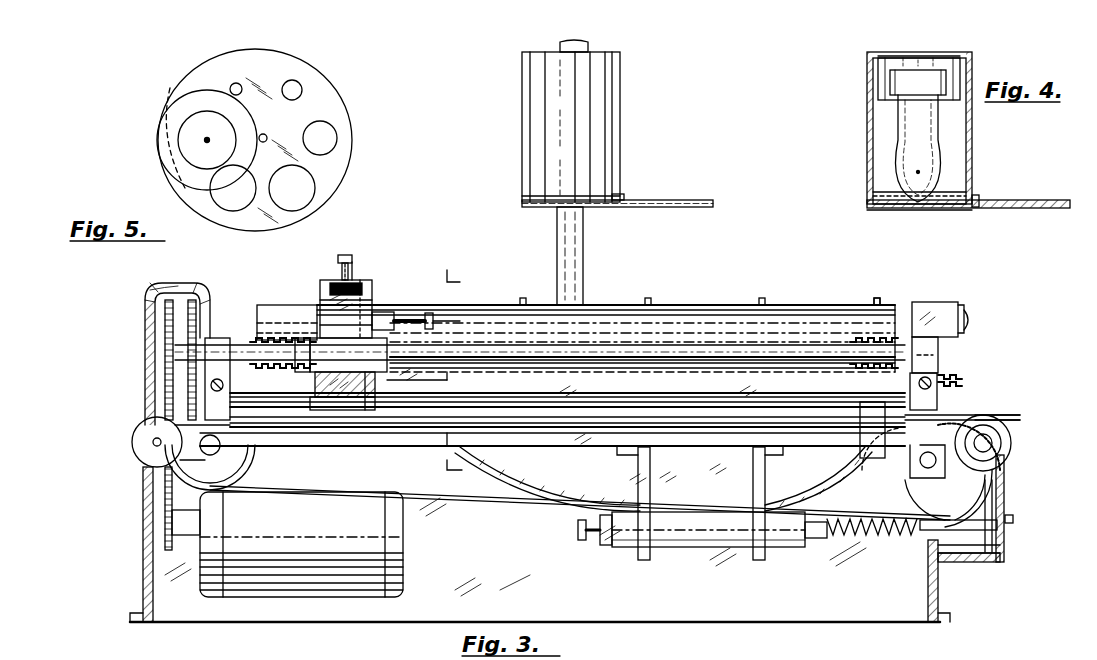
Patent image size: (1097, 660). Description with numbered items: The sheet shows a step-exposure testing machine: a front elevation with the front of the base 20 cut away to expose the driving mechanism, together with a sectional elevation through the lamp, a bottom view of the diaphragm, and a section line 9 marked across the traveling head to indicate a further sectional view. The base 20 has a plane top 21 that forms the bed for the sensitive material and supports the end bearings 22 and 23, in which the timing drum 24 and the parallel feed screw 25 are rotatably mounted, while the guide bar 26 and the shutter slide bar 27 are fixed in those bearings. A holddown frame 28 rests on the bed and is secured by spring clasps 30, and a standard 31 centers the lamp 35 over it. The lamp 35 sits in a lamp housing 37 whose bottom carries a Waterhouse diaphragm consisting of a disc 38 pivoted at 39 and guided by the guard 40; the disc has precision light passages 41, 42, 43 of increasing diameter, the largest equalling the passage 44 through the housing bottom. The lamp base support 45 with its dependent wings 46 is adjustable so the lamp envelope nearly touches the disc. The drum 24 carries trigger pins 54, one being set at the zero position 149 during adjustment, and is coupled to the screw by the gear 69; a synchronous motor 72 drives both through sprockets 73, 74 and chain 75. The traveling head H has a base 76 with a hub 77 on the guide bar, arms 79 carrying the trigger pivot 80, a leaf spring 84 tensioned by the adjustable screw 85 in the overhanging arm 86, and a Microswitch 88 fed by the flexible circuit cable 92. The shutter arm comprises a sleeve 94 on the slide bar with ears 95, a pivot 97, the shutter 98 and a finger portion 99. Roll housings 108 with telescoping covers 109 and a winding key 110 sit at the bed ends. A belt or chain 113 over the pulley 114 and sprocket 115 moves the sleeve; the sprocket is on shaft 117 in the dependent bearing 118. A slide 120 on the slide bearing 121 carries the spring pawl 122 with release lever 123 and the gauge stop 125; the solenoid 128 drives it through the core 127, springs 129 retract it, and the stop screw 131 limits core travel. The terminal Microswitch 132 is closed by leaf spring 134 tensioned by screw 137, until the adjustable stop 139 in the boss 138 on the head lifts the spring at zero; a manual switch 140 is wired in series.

In FIG. 3, the section line 9 is at (447, 280).
In FIG. 3, the base 20 is at (938, 586).
In FIG. 3, the plane top 21 is at (725, 430).
In FIG. 3, the end bearing 22 is at (205, 290).
In FIG. 3, the end bearing 23 is at (940, 355).
In FIG. 3, the timing drum 24 is at (670, 308).
In FIG. 3, the feed screw 25 is at (260, 330).
In FIG. 3, the guide bar 26 is at (685, 355).
In FIG. 3, the shutter slide bar 27 is at (770, 390).
In FIG. 3, the holddown frame 28 is at (790, 420).
In FIG. 3, the spring clasp 30 is at (250, 455).
In FIG. 3, the standard 31 is at (557, 250).
In FIG. 4, the lamp 35 is at (950, 165).
In FIG. 3, the lamp housing 37 is at (612, 148).
In FIG. 5, the lamp housing 37 is at (162, 118).
In FIG. 4, the lamp housing 37 is at (972, 128).
In FIG. 3, the disc 38 is at (700, 194).
In FIG. 5, the disc 38 is at (327, 108).
In FIG. 4, the disc 38 is at (1020, 200).
In FIG. 3, the pivot 39 is at (620, 197).
In FIG. 5, the pivot 39 is at (266, 136).
In FIG. 4, the pivot 39 is at (978, 196).
In FIG. 3, the guard 40 is at (598, 207).
In FIG. 5, the guard 40 is at (210, 100).
In FIG. 4, the guard 40 is at (965, 208).
In FIG. 5, the light passage 41 is at (205, 141).
In FIG. 4, the light passage 41 is at (910, 204).
In FIG. 5, the light passage 42 is at (238, 83).
In FIG. 5, the light passage 43 is at (296, 86).
In FIG. 5, the passage 44 is at (172, 95).
In FIG. 4, the passage 44 is at (890, 196).
In FIG. 4, the lamp base support 45 is at (950, 56).
In FIG. 4, the dependent wings 46 is at (878, 90).
In FIG. 3, the trigger pin 54 is at (762, 298).
In FIG. 3, the gear 69 is at (176, 286).
In FIG. 3, the synchronous motor 72 is at (403, 558).
In FIG. 3, the sprocket 73 is at (165, 520).
In FIG. 3, the sprocket 74 is at (165, 340).
In FIG. 3, the chain 75 is at (165, 390).
In FIG. 3, the base 76 is at (322, 338).
In FIG. 3, the hub 77 is at (310, 362).
In FIG. 3, the arms 79 is at (330, 300).
In FIG. 3, the pivot 80 is at (372, 283).
In FIG. 3, the leaf spring 84 is at (365, 283).
In FIG. 3, the adjustable screw 85 is at (352, 262).
In FIG. 3, the overhanging arm 86 is at (355, 278).
In FIG. 3, the Microswitch 88 is at (395, 310).
In FIG. 3, the circuit cable 92 is at (520, 488).
In FIG. 3, the sleeve 94 is at (360, 412).
In FIG. 3, the ears 95 is at (412, 388).
In FIG. 3, the pivot 97 is at (378, 412).
In FIG. 3, the shutter 98 is at (1005, 414).
In FIG. 3, the finger portion 99 is at (335, 412).
In FIG. 3, the roll housing 108 is at (132, 443).
In FIG. 3, the telescoping cover 109 is at (160, 437).
In FIG. 3, the key 110 is at (1002, 455).
In FIG. 3, the belt or chain 113 is at (535, 506).
In FIG. 3, the pulley 114 is at (180, 470).
In FIG. 3, the sprocket 115 is at (990, 478).
In FIG. 3, the shaft 117 is at (995, 490).
In FIG. 3, the dependent bearing 118 is at (965, 440).
In FIG. 3, the slide 120 is at (1013, 524).
In FIG. 3, the dependent slide bearing 121 is at (1000, 546).
In FIG. 3, the pawl 122 is at (1000, 560).
In FIG. 3, the release lever 123 is at (1008, 518).
In FIG. 3, the gauge and stop 125 is at (1005, 490).
In FIG. 3, the core 127 is at (815, 540).
In FIG. 3, the solenoid 128 is at (703, 548).
In FIG. 3, the spring 129 is at (872, 540).
In FIG. 3, the stop screw 131 is at (578, 532).
In FIG. 3, the Microswitch 132 is at (935, 310).
In FIG. 3, the leaf spring 134 is at (962, 310).
In FIG. 3, the tension adjusting screw 137 is at (968, 320).
In FIG. 3, the boss 138 is at (395, 325).
In FIG. 3, the adjustable stop 139 is at (435, 316).
In FIG. 3, the manually controlled switch 140 is at (960, 380).
In FIG. 3, the zero position 149 is at (880, 298).
In FIG. 3, the traveling head H is at (338, 262).